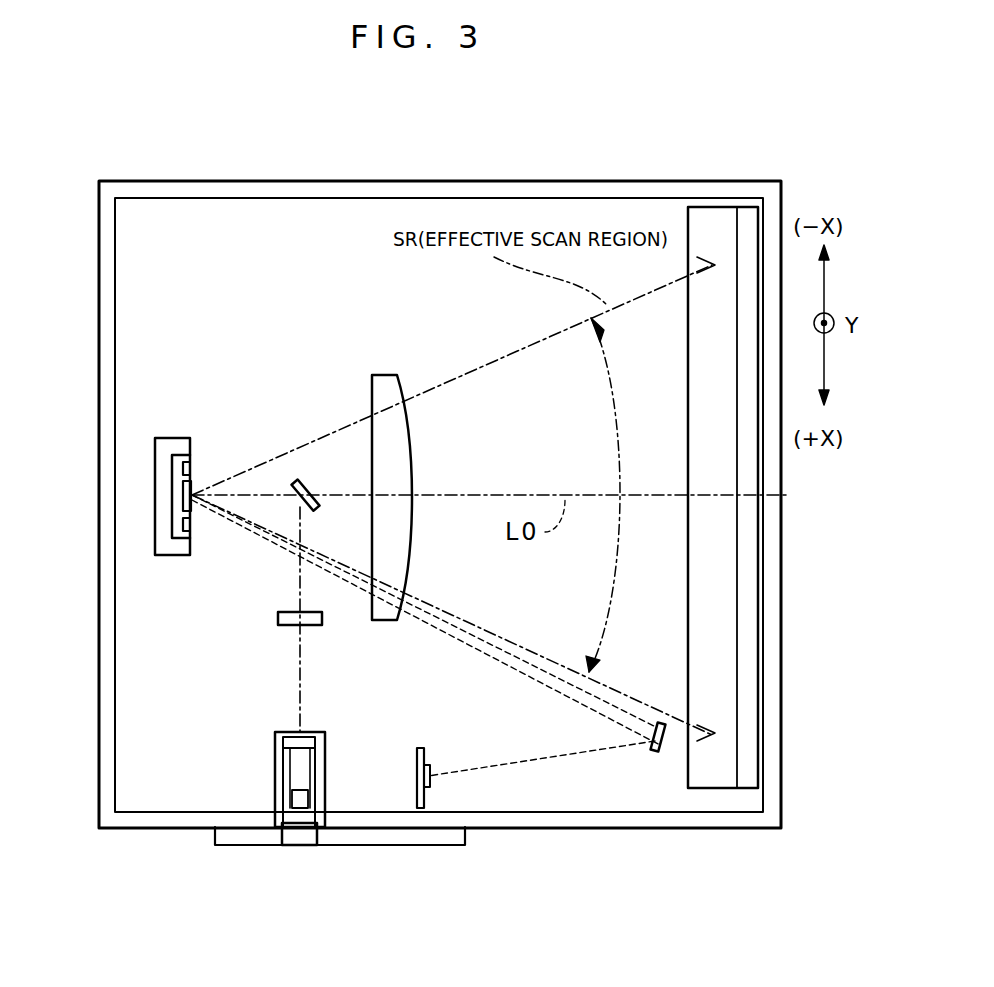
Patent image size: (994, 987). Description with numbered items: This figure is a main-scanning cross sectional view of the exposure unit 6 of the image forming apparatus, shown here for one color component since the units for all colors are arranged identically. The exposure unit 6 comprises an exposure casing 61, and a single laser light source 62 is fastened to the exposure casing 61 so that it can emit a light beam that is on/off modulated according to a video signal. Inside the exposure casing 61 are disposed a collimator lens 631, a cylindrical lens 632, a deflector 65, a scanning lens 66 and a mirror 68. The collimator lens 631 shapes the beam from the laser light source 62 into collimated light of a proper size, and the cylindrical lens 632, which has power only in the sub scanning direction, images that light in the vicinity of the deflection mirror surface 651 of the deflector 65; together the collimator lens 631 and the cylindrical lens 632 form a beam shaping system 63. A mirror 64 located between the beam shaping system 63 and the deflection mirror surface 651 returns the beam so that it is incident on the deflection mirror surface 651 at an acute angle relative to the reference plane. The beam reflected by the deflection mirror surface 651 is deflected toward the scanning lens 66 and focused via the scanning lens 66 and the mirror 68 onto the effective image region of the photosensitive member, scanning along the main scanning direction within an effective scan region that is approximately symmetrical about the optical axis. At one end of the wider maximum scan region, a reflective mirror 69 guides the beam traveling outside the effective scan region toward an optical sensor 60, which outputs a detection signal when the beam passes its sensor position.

The exposure unit 6 is at (466, 144).
The exposure casing 61 is at (708, 188).
The mirror 68 is at (708, 757).
The deflector 65 is at (178, 438).
The deflection mirror surface 651 is at (193, 485).
The scanning lens 66 is at (383, 385).
The mirror 64 is at (312, 490).
The beam shaping system 63 is at (182, 653).
The cylindrical lens 632 is at (278, 627).
The collimator lens 631 is at (283, 742).
The laser light source 62 is at (296, 835).
The optical sensor 60 is at (425, 786).
The reflective mirror 69 is at (652, 752).